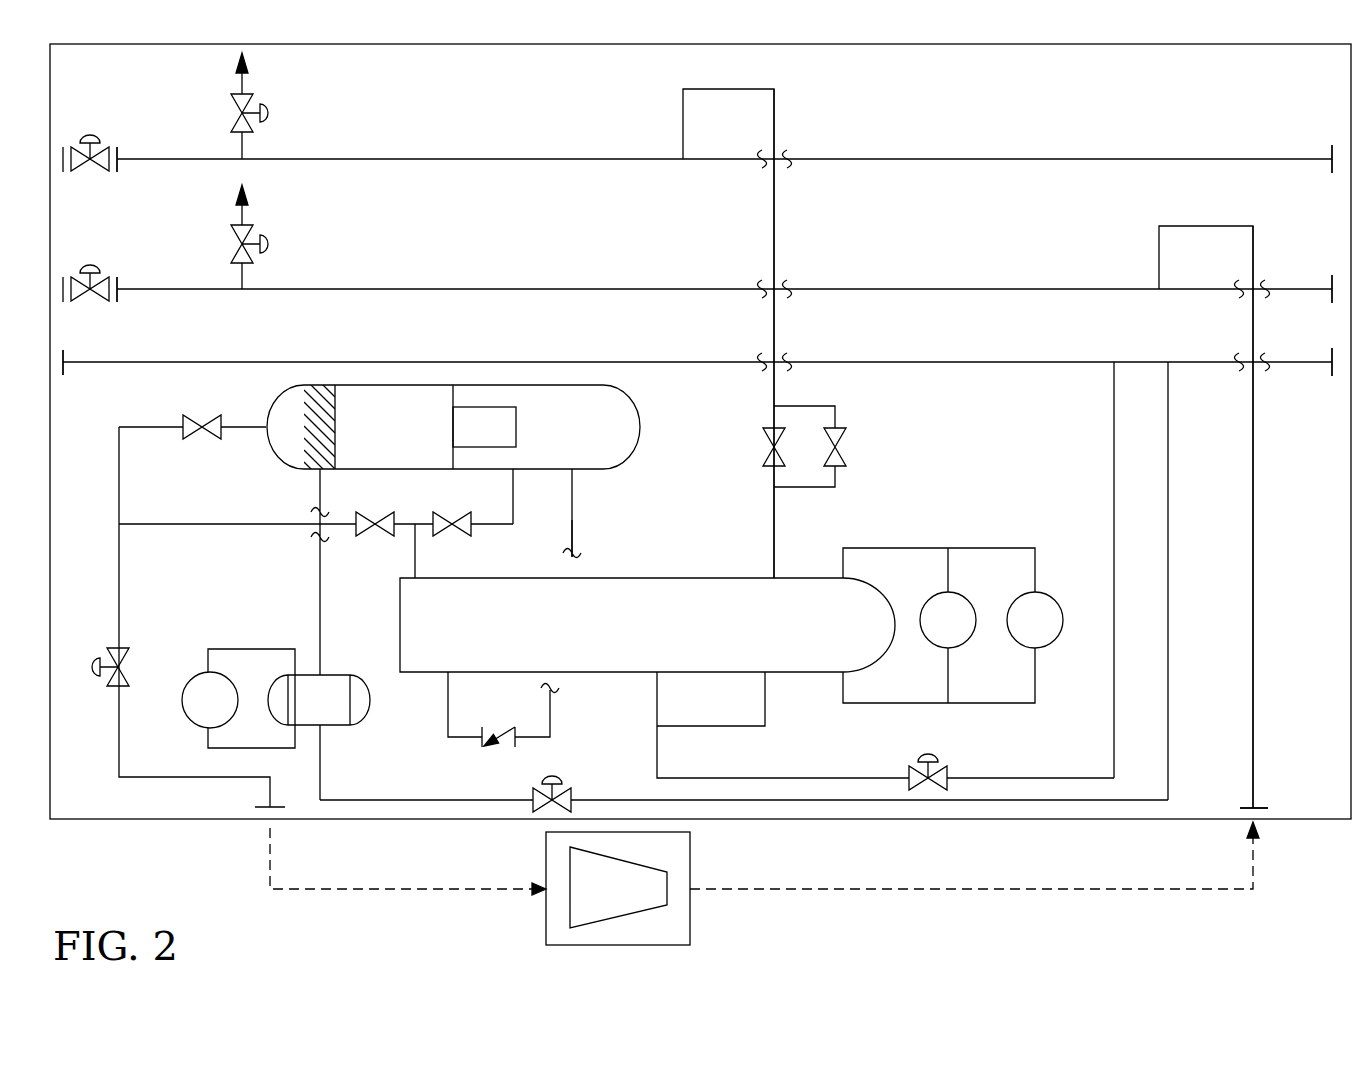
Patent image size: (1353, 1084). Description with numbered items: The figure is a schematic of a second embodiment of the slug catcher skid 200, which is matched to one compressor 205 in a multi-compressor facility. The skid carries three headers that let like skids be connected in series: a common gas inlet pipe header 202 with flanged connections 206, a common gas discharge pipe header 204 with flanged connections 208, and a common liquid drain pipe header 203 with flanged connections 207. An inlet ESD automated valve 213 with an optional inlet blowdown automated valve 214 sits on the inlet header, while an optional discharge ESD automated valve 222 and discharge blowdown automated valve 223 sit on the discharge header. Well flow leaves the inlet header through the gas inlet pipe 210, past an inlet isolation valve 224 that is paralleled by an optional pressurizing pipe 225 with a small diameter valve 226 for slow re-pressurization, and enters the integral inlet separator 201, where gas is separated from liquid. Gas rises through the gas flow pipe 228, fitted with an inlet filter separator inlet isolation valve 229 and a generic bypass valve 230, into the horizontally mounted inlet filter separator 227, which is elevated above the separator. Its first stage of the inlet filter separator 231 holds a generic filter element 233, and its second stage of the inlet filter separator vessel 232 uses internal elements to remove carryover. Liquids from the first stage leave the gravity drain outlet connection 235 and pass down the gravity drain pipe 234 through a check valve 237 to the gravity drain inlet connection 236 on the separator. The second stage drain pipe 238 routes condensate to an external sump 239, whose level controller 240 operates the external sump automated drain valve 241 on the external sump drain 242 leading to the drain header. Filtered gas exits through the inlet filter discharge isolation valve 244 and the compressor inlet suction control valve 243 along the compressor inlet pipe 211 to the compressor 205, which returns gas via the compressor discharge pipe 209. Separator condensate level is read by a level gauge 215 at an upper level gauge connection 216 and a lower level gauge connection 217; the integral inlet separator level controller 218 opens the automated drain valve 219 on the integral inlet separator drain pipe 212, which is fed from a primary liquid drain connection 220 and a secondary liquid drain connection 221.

The slug catcher skid 200 is at (180, 832).
The integral inlet separator 201 is at (649, 637).
The common gas inlet pipe header 202 is at (441, 157).
The common liquid drain pipe header 203 is at (441, 361).
The common gas discharge pipe header 204 is at (441, 288).
The compressor 205 is at (690, 855).
The flanged connections 206 is at (117, 170).
The flanged connections 207 is at (66, 375).
The flanged connections 208 is at (117, 298).
The compressor discharge pipe 209 is at (1253, 720).
The gas inlet pipe 210 is at (773, 537).
The compressor inlet pipe 211 is at (119, 570).
The integral inlet separator drain pipe 212 is at (1114, 395).
The inlet ESD automated valve 213 is at (95, 134).
The inlet blowdown automated valve 214 is at (272, 113).
The level gauge 215 is at (967, 631).
The upper level gauge connection 216 is at (843, 578).
The lower level gauge connection 217 is at (843, 672).
The integral inlet separator level controller 218 is at (1054, 631).
The automated drain valve 219 is at (950, 768).
The primary liquid drain connection 220 is at (657, 675).
The secondary liquid drain connection 221 is at (765, 675).
The discharge ESD automated valve 222 is at (95, 266).
The discharge blowdown automated valve 223 is at (272, 244).
The inlet isolation valve 224 is at (761, 436).
The pressurizing pipe 225 is at (840, 406).
The small diameter valve 226 is at (846, 455).
The inlet filter separator 227 is at (625, 390).
The gas flow pipe 228 is at (510, 485).
The inlet filter separator inlet isolation valve 229 is at (455, 532).
The generic bypass valve 230 is at (380, 510).
The first stage of the inlet filter separator 231 is at (587, 439).
The second stage of the inlet filter separator vessel 232 is at (407, 439).
The generic filter element 233 is at (503, 439).
The gravity drain pipe 234 is at (572, 530).
The gravity drain outlet connection 235 is at (572, 472).
The gravity drain inlet connection 236 is at (448, 675).
The check valve 237 is at (482, 745).
The second stage drain pipe 238 is at (320, 605).
The external sump 239 is at (337, 711).
The level controller 240 is at (229, 711).
The external sump automated drain valve 241 is at (572, 790).
The external sump drain 242 is at (320, 765).
The compressor inlet suction control valve 243 is at (95, 655).
The inlet filter discharge isolation valve 244 is at (207, 437).